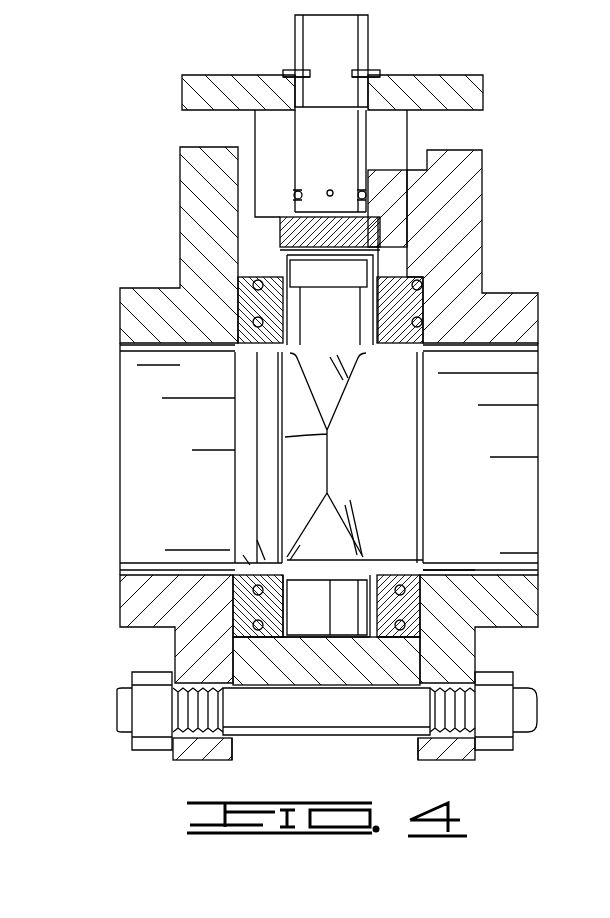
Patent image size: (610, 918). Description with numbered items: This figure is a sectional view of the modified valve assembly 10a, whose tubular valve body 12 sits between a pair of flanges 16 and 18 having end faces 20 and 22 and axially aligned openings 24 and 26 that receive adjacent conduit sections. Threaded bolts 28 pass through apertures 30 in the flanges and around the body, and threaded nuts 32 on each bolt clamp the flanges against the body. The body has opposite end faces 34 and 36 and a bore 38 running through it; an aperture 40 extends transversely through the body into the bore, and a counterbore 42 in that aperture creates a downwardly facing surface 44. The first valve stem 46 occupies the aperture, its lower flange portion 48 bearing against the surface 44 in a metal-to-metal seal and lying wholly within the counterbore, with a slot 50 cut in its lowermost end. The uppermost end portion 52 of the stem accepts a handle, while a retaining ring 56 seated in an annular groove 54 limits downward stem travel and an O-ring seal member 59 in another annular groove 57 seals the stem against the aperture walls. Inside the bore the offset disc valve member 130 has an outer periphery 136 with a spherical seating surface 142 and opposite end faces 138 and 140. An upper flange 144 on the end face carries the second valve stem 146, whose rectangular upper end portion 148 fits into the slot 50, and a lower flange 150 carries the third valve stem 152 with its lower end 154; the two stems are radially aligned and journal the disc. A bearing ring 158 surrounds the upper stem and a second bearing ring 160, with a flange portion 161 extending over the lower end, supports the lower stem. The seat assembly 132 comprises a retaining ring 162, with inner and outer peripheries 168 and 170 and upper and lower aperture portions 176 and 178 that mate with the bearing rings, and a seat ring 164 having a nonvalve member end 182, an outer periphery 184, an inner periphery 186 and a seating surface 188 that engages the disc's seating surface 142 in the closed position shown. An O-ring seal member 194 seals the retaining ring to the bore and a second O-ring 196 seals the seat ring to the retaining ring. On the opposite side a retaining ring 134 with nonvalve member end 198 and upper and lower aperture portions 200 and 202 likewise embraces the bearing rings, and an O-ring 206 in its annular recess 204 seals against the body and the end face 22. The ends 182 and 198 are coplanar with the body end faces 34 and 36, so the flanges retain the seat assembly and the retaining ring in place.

The modified valve assembly 10a is at (500, 122).
The valve body 12 is at (300, 686).
The flange 16 is at (195, 765).
The flange 18 is at (440, 765).
The end face 20 is at (232, 762).
The end face 22 is at (418, 757).
The opening 24 is at (132, 563).
The opening 26 is at (520, 570).
The threaded bolt 28 is at (300, 735).
The aperture 30 is at (448, 715).
The threaded nut 32 is at (148, 745).
The end face 34 is at (215, 667).
The end face 36 is at (421, 675).
The bore 38 is at (395, 640).
The aperture 40 is at (297, 175).
The counterbore 42 is at (282, 230).
The downwardly facing surface 44 is at (378, 226).
The first valve stem 46 is at (362, 132).
The lower flange portion 48 is at (367, 198).
The slot 50 is at (282, 250).
The uppermost end portion 52 is at (366, 38).
The annular groove 54 is at (312, 74).
The retaining ring 56 is at (288, 72).
The annular groove 57 is at (330, 190).
The O-ring seal member 59 is at (291, 195).
The disc valve member 130 is at (270, 408).
The seat assembly 132 is at (243, 560).
The retaining ring 134 is at (408, 560).
The outer periphery 136 is at (290, 338).
The end face 138 is at (250, 393).
The end face 140 is at (330, 436).
The seating surface 142 is at (237, 358).
The upper flange 144 is at (345, 375).
The second valve stem 146 is at (380, 333).
The upper end portion 148 is at (379, 260).
The lower flange 150 is at (352, 560).
The third valve stem 152 is at (400, 570).
The lower end 154 is at (318, 640).
The bearing ring 158 is at (300, 315).
The second bearing ring 160 is at (292, 592).
The flange portion 161 is at (340, 645).
The retaining ring 162 is at (245, 612).
The seat ring 164 is at (240, 582).
The inner periphery 168 is at (290, 560).
The outer periphery 170 is at (252, 632).
The upper aperture portion 176 is at (328, 273).
The lower aperture portion 178 is at (293, 612).
The nonvalve member end 182 is at (240, 305).
The outer periphery 184 is at (252, 283).
The inner periphery 186 is at (235, 558).
The seating surface 188 is at (265, 560).
The O-ring seal member 194 is at (255, 280).
The second O-ring 196 is at (292, 320).
The nonvalve member end 198 is at (425, 600).
The upper aperture portion 200 is at (380, 313).
The lower aperture portion 202 is at (420, 620).
The annular recess 204 is at (420, 300).
The O-ring 206 is at (425, 640).